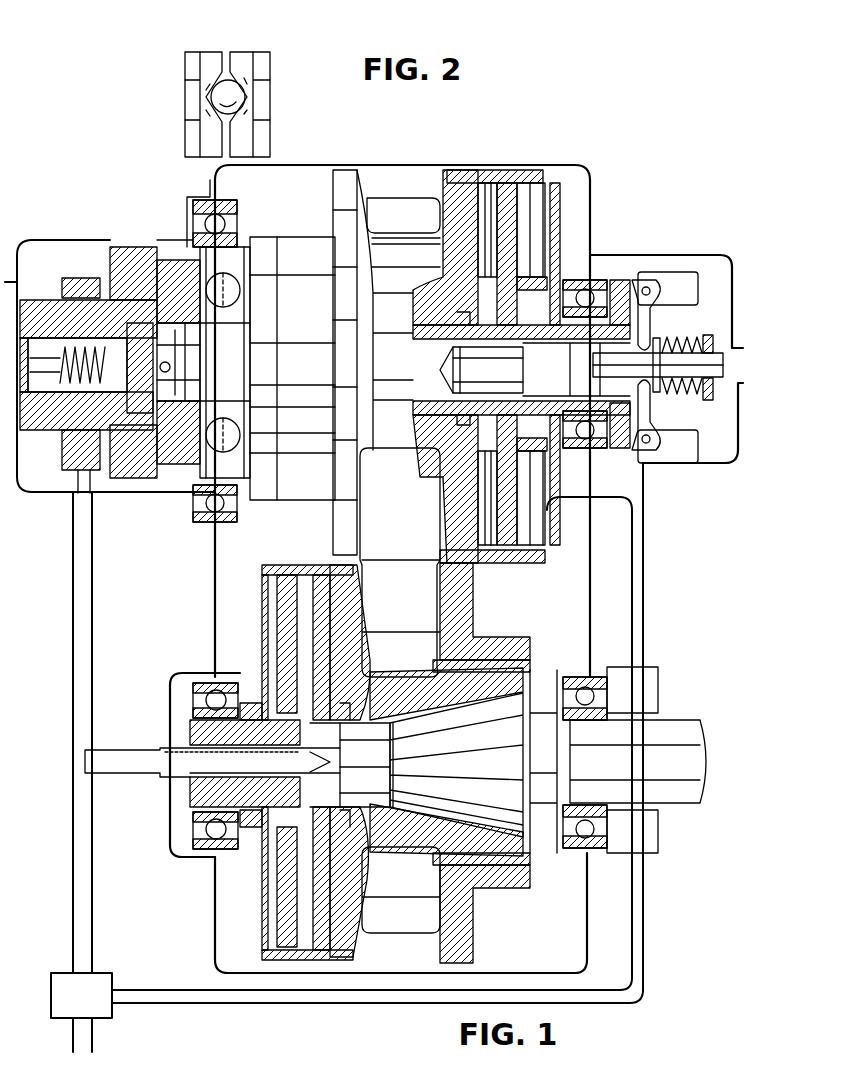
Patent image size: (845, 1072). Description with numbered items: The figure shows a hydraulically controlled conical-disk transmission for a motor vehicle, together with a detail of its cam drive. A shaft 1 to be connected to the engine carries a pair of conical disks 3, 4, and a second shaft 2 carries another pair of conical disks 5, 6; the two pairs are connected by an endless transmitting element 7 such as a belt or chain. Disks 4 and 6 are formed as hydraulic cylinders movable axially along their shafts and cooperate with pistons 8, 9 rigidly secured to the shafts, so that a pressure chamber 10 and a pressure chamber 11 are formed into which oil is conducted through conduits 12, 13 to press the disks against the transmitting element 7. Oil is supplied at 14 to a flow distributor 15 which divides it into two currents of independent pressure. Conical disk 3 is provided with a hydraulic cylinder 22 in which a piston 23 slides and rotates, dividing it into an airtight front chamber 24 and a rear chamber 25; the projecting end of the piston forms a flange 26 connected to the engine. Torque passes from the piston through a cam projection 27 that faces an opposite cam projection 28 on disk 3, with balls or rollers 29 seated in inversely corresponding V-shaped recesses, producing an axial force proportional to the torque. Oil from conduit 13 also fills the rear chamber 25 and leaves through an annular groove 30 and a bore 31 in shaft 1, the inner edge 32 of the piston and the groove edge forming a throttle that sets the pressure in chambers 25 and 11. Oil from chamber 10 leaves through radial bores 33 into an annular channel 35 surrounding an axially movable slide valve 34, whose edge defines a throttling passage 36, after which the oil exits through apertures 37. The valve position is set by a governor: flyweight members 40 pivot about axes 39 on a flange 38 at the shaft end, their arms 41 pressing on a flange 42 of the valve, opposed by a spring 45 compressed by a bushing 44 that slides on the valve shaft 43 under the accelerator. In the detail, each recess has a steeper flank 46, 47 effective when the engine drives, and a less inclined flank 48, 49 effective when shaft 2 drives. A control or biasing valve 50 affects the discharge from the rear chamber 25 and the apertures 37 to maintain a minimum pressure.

In FIG. 1, the shaft 1 is at (422, 406).
In FIG. 1, the second shaft 2 is at (267, 803).
In FIG. 1, the conical disk 3 is at (362, 530).
In FIG. 1, the conical disk 4 is at (455, 502).
In FIG. 1, the conical disk 5 is at (455, 615).
In FIG. 1, the conical disk 6 is at (345, 590).
In FIG. 1, the endless transmitting element 7 is at (395, 960).
In FIG. 1, the piston 8 is at (503, 520).
In FIG. 1, the piston 9 is at (280, 912).
In FIG. 1, the pressure chamber 10 is at (487, 225).
In FIG. 1, the pressure chamber 11 is at (305, 622).
In FIG. 1, the conduit 12 is at (408, 1003).
In FIG. 1, the conduit 13 is at (92, 880).
In FIG. 1, the oil supply 14 is at (85, 1035).
In FIG. 1, the flow distributor 15 is at (97, 985).
In FIG. 1, the hydraulic cylinder 22 is at (198, 212).
In FIG. 1, the piston 23 is at (175, 262).
In FIG. 1, the front chamber 24 is at (193, 505).
In FIG. 1, the rear chamber 25 is at (125, 280).
In FIG. 1, the flange 26 is at (45, 300).
In FIG. 2, the cam projection 27 is at (210, 62).
In FIG. 1, the cam projection 27 is at (215, 268).
In FIG. 2, the cam projection 28 is at (245, 62).
In FIG. 1, the cam projection 28 is at (245, 268).
In FIG. 2, the balls or rollers 29 is at (232, 97).
In FIG. 1, the balls or rollers 29 is at (232, 285).
In FIG. 1, the annular groove 30 is at (125, 482).
In FIG. 1, the bore 31 is at (165, 402).
In FIG. 1, the inner edge 32 is at (170, 300).
In FIG. 1, the radial bores 33 is at (525, 240).
In FIG. 1, the slide valve 34 is at (420, 463).
In FIG. 1, the annular channel 35 is at (617, 280).
In FIG. 1, the throttling passage 36 is at (580, 280).
In FIG. 1, the apertures 37 is at (535, 520).
In FIG. 1, the flange 38 is at (595, 470).
In FIG. 1, the axes 39 is at (625, 450).
In FIG. 1, the flyweight members 40 is at (690, 272).
In FIG. 1, the arms 41 is at (650, 288).
In FIG. 1, the flange 42 is at (660, 465).
In FIG. 1, the shaft 43 is at (708, 465).
In FIG. 1, the bushing 44 is at (730, 455).
In FIG. 1, the spring 45 is at (685, 338).
In FIG. 2, the steeper flank 46 is at (206, 90).
In FIG. 2, the steeper flank 47 is at (244, 114).
In FIG. 2, the less inclined flank 48 is at (206, 118).
In FIG. 2, the less inclined flank 49 is at (244, 78).
In FIG. 1, the control or biasing valve 50 is at (75, 345).